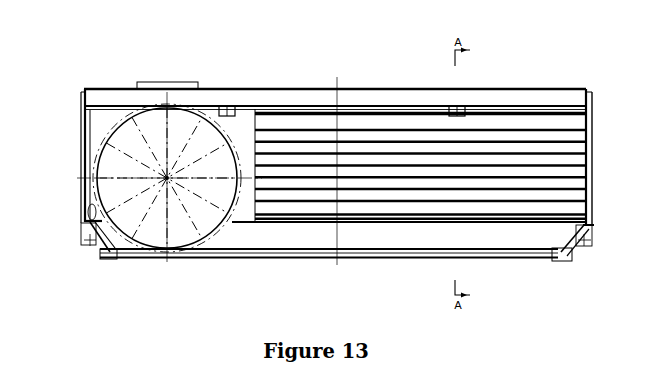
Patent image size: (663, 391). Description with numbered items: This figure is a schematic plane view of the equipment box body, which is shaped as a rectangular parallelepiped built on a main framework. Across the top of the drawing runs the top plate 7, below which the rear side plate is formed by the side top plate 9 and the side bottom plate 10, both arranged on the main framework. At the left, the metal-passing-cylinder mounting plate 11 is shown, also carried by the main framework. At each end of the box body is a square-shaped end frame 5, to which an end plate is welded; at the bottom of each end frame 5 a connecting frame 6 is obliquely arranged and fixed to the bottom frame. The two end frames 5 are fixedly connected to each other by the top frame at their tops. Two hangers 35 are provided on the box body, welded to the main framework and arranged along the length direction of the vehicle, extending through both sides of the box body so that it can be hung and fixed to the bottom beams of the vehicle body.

The end frame 5 is at (316, 121).
The connecting frame 6 is at (314, 256).
The top plate 7 is at (335, 64).
The side top plate 9 is at (420, 207).
The side bottom plate 10 is at (329, 272).
The metal-passing-cylinder mounting plate 11 is at (169, 199).
The hanger 35 is at (314, 67).